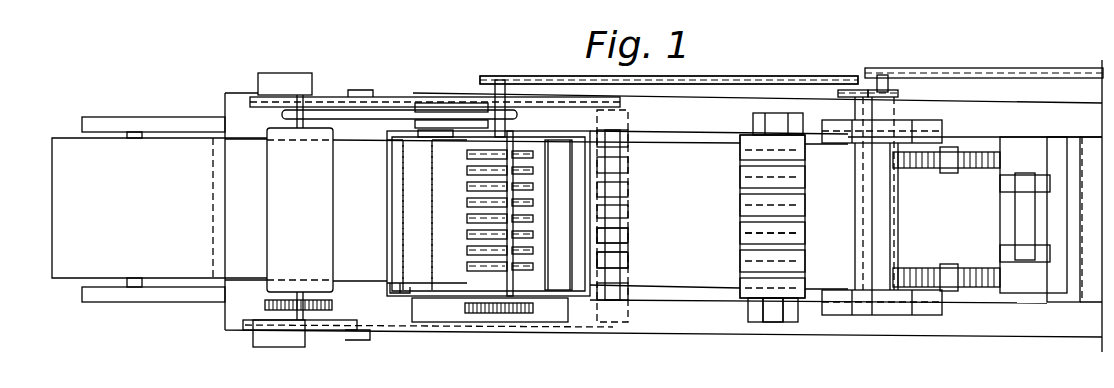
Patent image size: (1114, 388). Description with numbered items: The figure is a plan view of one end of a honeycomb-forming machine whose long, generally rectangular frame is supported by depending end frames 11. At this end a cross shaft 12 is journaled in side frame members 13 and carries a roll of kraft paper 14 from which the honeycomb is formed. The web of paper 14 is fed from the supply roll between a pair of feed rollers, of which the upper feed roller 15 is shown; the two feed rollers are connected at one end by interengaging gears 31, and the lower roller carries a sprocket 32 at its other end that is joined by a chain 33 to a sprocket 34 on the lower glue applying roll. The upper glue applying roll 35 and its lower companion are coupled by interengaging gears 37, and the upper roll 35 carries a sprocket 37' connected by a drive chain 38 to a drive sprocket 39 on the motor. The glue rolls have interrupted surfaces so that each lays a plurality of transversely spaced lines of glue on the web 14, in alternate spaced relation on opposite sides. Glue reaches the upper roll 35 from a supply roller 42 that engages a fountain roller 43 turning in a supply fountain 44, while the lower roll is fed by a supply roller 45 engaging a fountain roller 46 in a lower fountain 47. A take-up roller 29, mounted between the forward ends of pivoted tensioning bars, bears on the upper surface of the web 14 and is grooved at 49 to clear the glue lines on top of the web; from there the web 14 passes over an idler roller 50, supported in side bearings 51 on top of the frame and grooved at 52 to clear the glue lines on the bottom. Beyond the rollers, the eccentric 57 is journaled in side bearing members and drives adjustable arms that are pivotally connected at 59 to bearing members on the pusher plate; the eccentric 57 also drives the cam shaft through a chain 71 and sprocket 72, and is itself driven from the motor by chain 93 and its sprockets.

The end frames 11 is at (663, 206).
The cross shaft 12 is at (133, 287).
The side frame members 13 is at (153, 126).
The roll of kraft paper 14 is at (75, 205).
The upper feed roller 15 is at (306, 216).
The take-up roller 29 is at (630, 167).
The interengaging gears 31 is at (335, 306).
The sprocket 32 is at (313, 102).
The chain 33 is at (382, 113).
The sprocket 34 is at (492, 108).
The upper glue applying roll 35 is at (477, 228).
The interengaging gears 37 is at (490, 328).
The sprocket 37' is at (669, 63).
The drive chain 38 is at (718, 76).
The drive sprocket 39 is at (850, 88).
The supply roller 42 is at (540, 264).
The fountain roller 43 is at (562, 208).
The supply fountain 44 is at (580, 238).
The supply roller 45 is at (433, 233).
The fountain roller 46 is at (407, 258).
The lower fountain 47 is at (400, 293).
The grooves 49 is at (630, 195).
The idler roller 50 is at (753, 292).
The side bearings 51 is at (773, 312).
The grooves 52 is at (742, 240).
The eccentric 57 is at (738, 202).
The pivotal connection 59 is at (1020, 222).
The chain 71 is at (1003, 68).
The sprocket 72 is at (890, 72).
The chain 93 is at (905, 94).